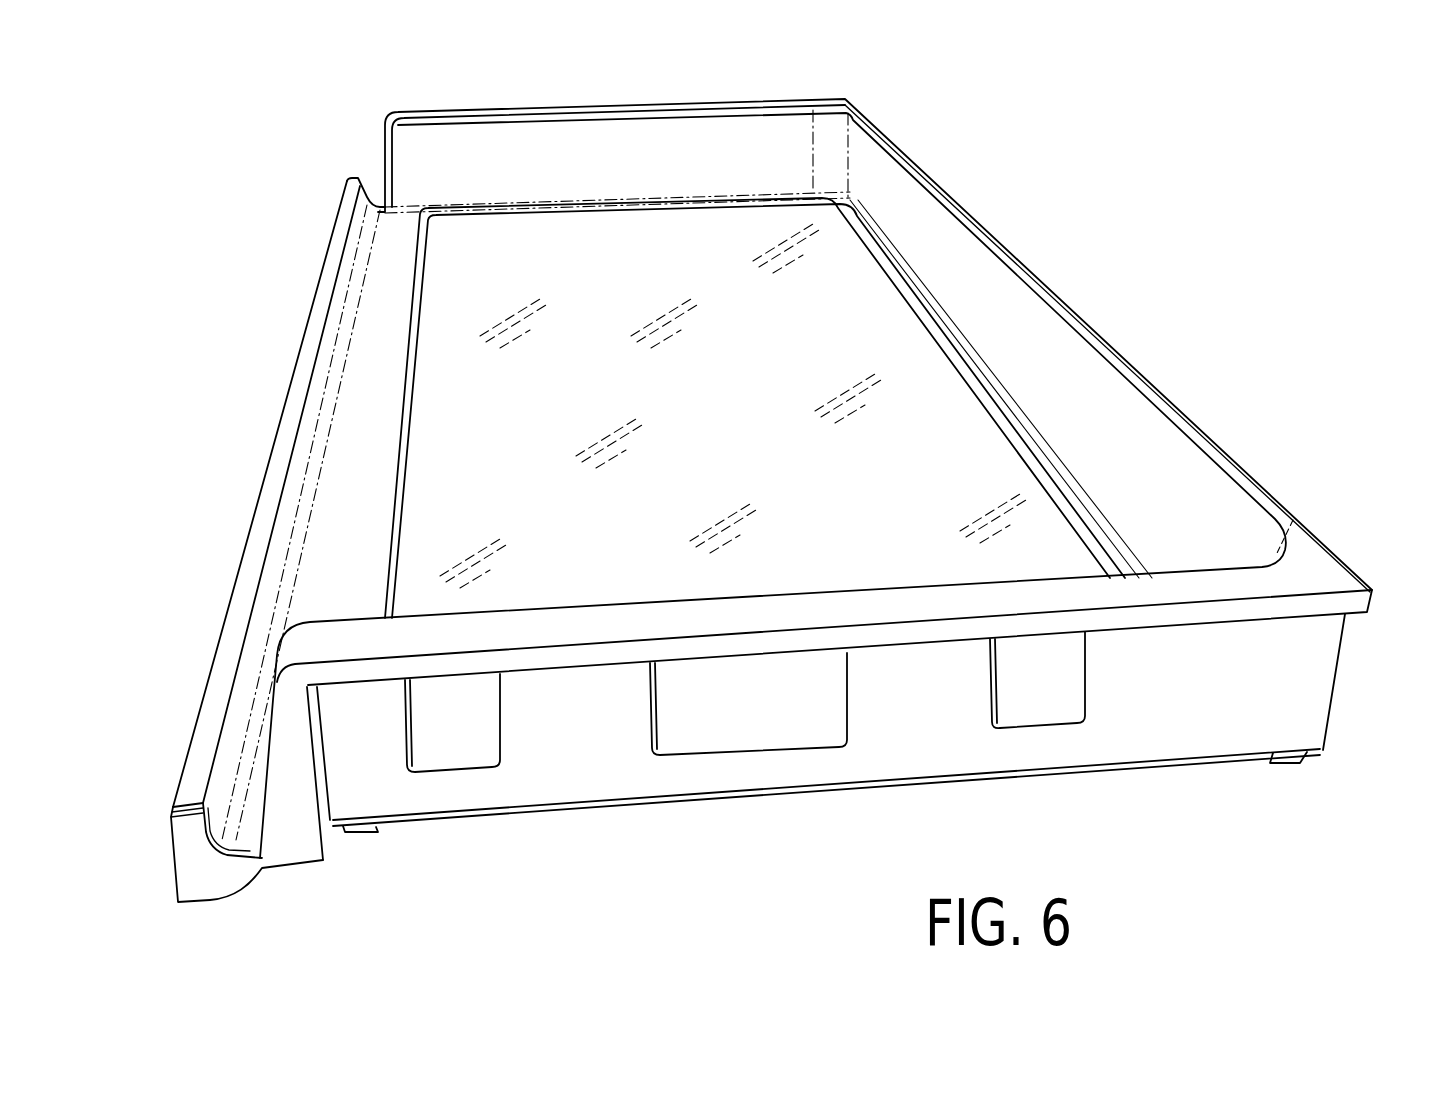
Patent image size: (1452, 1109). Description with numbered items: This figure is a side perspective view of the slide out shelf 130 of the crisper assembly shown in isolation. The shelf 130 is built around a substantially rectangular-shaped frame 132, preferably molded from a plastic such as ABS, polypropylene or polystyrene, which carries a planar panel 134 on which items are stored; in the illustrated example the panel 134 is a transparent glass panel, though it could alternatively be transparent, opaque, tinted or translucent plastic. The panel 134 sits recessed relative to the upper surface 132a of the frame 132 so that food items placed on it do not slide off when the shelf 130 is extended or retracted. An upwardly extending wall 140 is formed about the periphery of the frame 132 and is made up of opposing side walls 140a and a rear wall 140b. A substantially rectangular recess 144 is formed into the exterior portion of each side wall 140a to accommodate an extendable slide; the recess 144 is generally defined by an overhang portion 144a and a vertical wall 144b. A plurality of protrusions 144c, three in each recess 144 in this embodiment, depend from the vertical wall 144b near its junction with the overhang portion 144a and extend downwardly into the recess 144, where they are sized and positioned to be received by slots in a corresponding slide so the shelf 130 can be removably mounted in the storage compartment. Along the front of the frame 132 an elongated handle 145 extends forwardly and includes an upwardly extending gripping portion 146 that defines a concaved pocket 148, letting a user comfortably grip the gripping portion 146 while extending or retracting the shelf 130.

The slide out shelf 130 is at (1216, 150).
The frame 132 is at (339, 356).
The upper surface 132a is at (381, 283).
The planar panel 134 is at (630, 243).
The upwardly extending wall 140 is at (702, 141).
The side wall 140a is at (512, 143).
The rear wall 140b is at (1097, 392).
The recess 144 is at (933, 720).
The overhang portion 144a is at (1303, 622).
The vertical wall 144b is at (603, 790).
The protrusions 144c is at (1065, 693).
The elongated handle 145 is at (192, 602).
The gripping portion 146 is at (262, 530).
The concaved pocket 148 is at (256, 805).